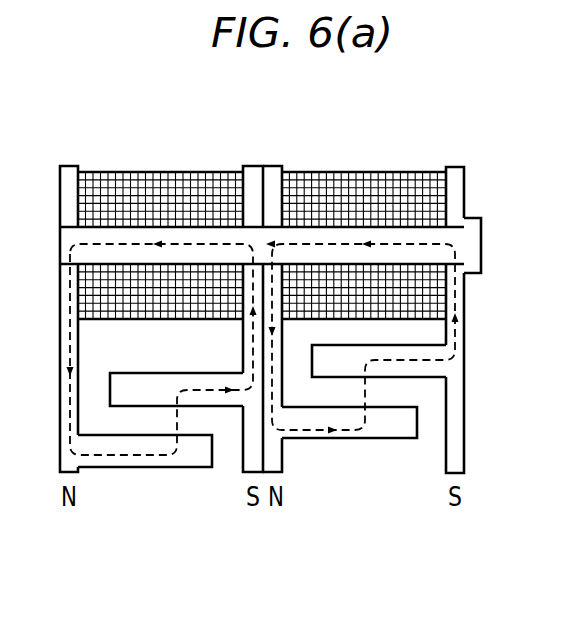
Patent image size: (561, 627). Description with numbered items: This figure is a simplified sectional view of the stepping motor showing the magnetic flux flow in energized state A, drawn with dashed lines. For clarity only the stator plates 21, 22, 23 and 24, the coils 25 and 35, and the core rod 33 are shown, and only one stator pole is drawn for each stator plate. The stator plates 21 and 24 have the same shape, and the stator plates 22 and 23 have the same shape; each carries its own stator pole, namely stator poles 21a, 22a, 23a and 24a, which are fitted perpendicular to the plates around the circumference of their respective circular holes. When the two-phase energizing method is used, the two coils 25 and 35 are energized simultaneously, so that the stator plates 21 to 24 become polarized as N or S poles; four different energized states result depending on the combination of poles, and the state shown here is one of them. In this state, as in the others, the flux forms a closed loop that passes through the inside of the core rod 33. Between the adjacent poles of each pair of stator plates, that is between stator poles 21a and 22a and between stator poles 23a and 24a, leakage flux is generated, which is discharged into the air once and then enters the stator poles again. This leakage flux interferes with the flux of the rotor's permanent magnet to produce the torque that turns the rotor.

The stator plate 21 is at (71, 166).
The stator plate 22 is at (253, 166).
The stator plate 23 is at (275, 166).
The stator plate 24 is at (456, 167).
The coil 25 is at (188, 172).
The coil 35 is at (387, 172).
The core rod 33 is at (131, 205).
The stator pole 21a is at (143, 467).
The stator pole 22a is at (174, 373).
The stator pole 23a is at (345, 438).
The stator pole 24a is at (372, 377).